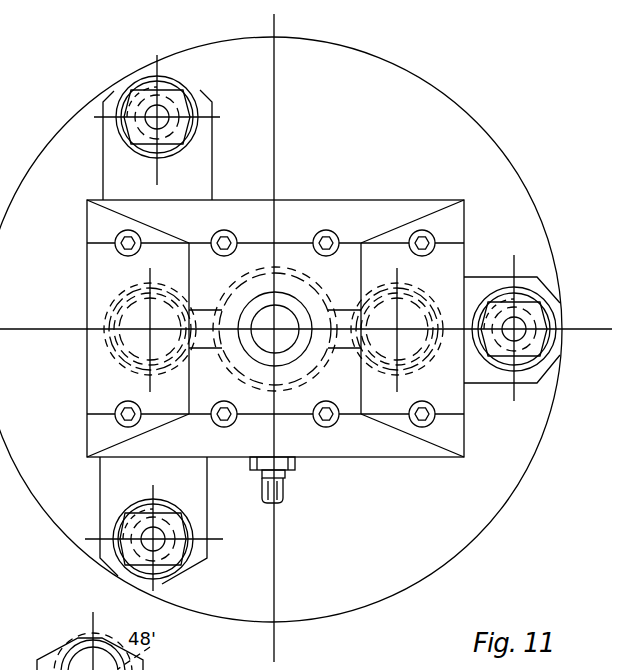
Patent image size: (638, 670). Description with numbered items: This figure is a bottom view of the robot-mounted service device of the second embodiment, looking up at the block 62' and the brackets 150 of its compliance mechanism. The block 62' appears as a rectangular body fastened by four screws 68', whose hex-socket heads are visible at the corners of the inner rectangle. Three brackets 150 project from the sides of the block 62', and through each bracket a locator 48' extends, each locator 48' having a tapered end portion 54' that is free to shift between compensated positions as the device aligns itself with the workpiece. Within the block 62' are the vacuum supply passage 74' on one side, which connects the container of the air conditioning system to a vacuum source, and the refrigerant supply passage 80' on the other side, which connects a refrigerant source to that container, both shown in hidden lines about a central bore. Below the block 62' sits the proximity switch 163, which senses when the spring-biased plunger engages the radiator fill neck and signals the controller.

The locator 48' is at (341, 324).
The tapered end portion 54' is at (359, 335).
The block 62' is at (275, 306).
The screw 68' is at (275, 331).
The vacuum supply passage 74' is at (114, 331).
The refrigerant supply passage 80' is at (428, 348).
The bracket 150 is at (212, 162).
The proximity switch 163 is at (285, 478).